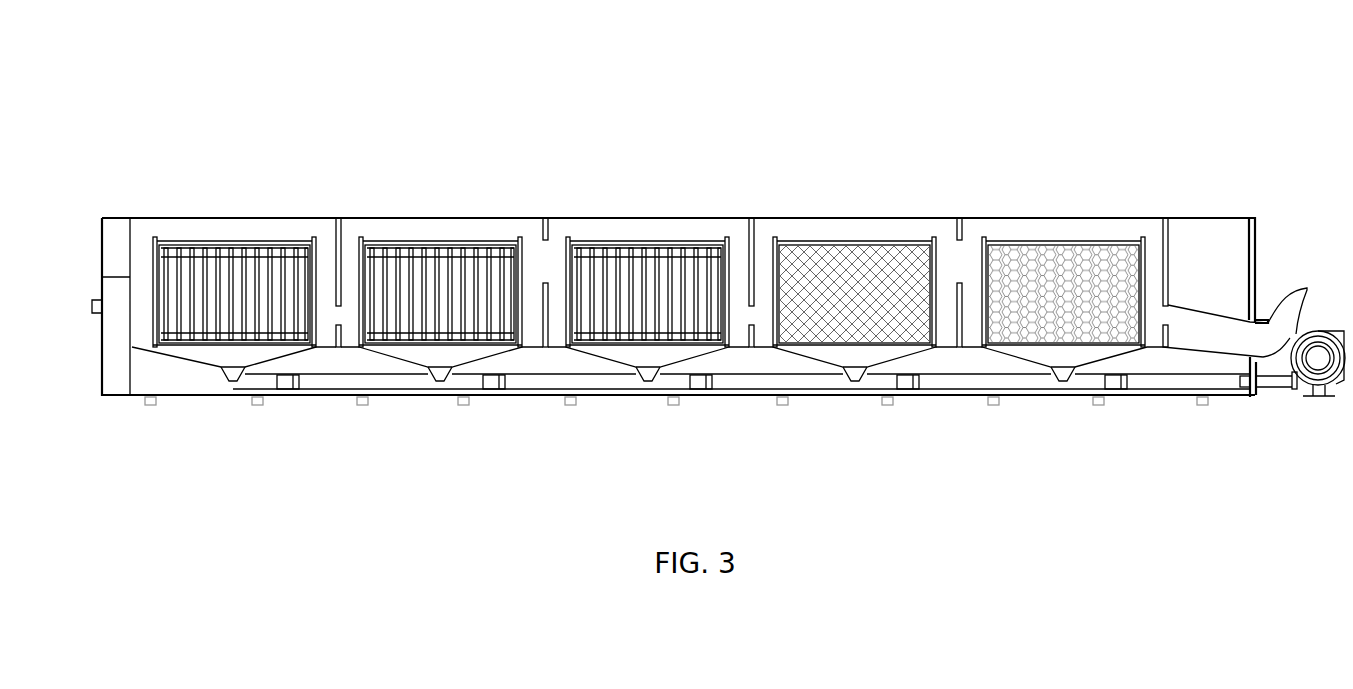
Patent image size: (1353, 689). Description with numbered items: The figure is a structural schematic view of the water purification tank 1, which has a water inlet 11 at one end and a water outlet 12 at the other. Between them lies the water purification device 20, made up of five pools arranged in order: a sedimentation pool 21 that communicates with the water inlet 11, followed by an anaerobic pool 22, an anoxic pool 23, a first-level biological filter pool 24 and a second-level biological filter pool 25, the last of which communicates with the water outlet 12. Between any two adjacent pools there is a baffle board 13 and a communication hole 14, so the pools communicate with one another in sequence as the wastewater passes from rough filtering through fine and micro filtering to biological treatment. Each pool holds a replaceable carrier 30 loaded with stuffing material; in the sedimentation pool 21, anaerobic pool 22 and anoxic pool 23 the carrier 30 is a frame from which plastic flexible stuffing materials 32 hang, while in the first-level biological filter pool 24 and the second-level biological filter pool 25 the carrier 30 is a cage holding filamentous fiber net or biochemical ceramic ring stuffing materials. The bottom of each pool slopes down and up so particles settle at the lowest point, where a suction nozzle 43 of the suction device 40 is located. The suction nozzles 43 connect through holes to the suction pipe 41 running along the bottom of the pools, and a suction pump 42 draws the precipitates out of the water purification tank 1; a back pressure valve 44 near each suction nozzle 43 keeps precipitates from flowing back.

The water purification tank 1 is at (182, 398).
The water inlet 11 is at (120, 233).
The water outlet 12 is at (1253, 340).
The baffle board 13 is at (334, 218).
The communication hole 14 is at (545, 218).
The water purification device 20 is at (443, 62).
The sedimentation pool 21 is at (226, 237).
The anaerobic pool 22 is at (421, 237).
The anoxic pool 23 is at (638, 237).
The level-1 biological filter pool 24 is at (862, 237).
The level-2 biological filter pool 25 is at (1055, 237).
The carrier 30 is at (158, 331).
The plastic flexible stuffing material 32 is at (207, 323).
The suction device 40 is at (1278, 432).
The suction pipe 41 is at (1232, 384).
The suction pump 42 is at (1330, 386).
The suction nozzle 43 is at (233, 380).
The back pressure valve 44 is at (288, 384).